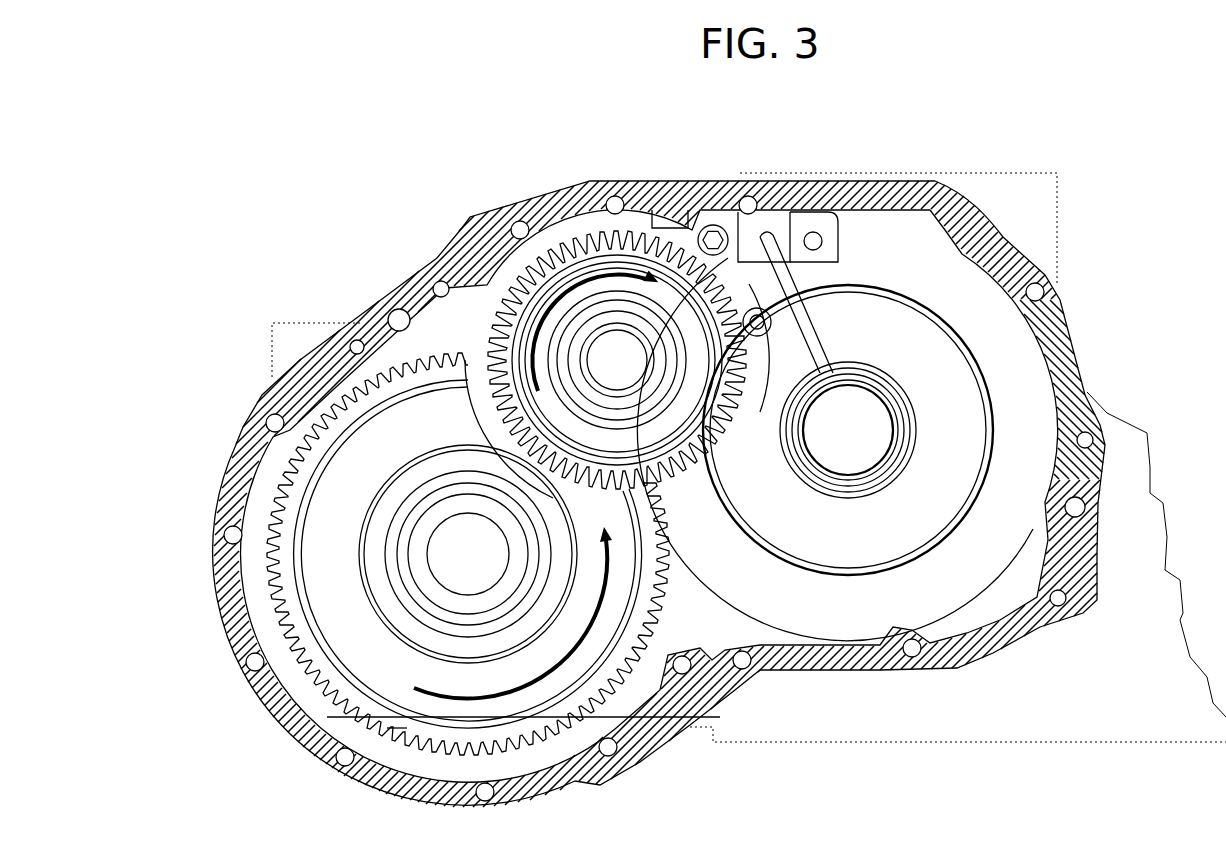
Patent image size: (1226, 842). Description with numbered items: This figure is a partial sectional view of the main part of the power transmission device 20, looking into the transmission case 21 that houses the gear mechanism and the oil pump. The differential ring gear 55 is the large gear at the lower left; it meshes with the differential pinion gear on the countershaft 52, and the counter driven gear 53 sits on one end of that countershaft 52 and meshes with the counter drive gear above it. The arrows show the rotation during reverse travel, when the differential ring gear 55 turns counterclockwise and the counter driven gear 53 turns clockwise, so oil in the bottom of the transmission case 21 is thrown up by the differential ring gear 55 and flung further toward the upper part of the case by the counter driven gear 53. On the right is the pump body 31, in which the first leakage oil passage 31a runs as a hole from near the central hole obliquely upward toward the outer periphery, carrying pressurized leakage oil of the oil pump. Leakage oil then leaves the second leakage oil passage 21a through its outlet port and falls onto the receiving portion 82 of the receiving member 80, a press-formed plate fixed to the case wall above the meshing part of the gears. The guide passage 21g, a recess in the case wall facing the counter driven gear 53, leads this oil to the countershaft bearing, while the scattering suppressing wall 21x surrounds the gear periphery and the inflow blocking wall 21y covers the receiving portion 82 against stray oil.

The power transmission device 20 is at (311, 260).
The transmission case 21 is at (943, 228).
The scattering suppressing wall 21x is at (663, 213).
The inflow blocking wall 21y is at (748, 253).
The second leakage oil passage 21a is at (778, 232).
The guide passage 21g is at (690, 320).
The pump body 31 is at (870, 250).
The first leakage oil passage 31a is at (817, 347).
The countershaft 52 is at (523, 335).
The counter driven gear 53 is at (577, 342).
The differential ring gear 55 is at (327, 413).
The receiving member 80 is at (683, 233).
The receiving portion 82 is at (757, 332).